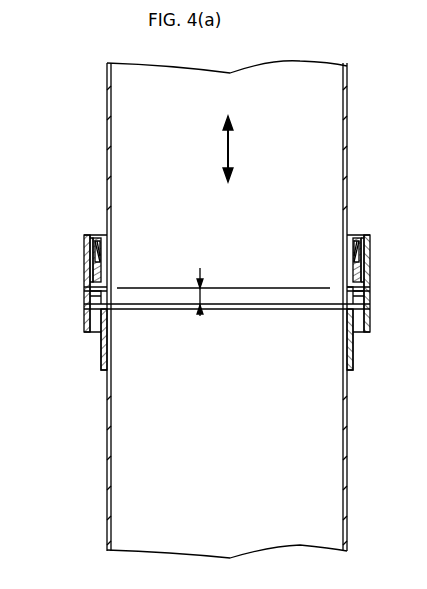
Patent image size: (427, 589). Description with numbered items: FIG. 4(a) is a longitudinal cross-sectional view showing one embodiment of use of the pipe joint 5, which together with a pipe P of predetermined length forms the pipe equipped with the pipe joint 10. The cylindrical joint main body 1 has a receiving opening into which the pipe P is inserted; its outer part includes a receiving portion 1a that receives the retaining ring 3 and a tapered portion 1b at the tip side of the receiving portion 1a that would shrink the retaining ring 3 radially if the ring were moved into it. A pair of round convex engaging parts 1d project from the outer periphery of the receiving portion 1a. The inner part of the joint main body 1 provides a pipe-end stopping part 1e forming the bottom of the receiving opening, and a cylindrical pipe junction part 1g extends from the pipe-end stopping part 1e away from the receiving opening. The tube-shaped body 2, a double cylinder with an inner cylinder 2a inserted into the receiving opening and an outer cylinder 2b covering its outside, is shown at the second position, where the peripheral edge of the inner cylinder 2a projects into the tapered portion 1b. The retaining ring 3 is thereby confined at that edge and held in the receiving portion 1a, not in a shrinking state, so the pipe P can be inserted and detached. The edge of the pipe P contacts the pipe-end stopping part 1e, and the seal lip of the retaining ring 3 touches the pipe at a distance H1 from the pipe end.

The pipe P is at (230, 309).
The pipe equipped with the pipe joint 10 is at (350, 472).
The joint main body 1 is at (89, 287).
The receiving portion 1a is at (115, 253).
The tapered portion 1b is at (407, 139).
The convex engaging parts 1d is at (370, 292).
The pipe-end stopping part 1e is at (347, 295).
The pipe junction part 1g is at (106, 354).
The tube-shaped body 2 is at (82, 324).
The inner cylinder 2a is at (112, 245).
The outer cylinder 2b is at (98, 264).
The retaining ring 3 is at (345, 266).
The pipe joint 5 is at (376, 237).
The distance H1 is at (200, 292).